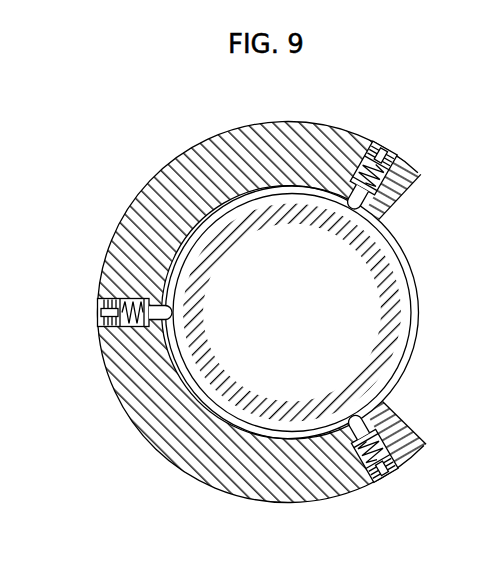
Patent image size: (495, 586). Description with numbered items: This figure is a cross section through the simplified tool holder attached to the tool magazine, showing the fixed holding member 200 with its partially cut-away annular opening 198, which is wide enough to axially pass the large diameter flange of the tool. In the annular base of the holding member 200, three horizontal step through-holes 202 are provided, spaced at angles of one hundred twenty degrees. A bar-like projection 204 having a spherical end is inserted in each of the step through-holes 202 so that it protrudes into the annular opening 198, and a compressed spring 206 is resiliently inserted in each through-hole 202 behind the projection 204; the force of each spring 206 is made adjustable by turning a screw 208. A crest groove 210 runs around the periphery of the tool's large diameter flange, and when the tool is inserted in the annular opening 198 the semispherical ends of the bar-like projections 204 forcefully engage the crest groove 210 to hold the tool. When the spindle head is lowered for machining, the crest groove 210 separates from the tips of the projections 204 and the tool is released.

The annular opening 198 is at (400, 240).
The fixed holding member 200 is at (210, 480).
The step through-holes 202 is at (366, 463).
The bar-like projections 204 is at (277, 287).
The compressed spring 206 is at (388, 195).
The screw 208 is at (383, 168).
The crest groove 210 is at (412, 334).